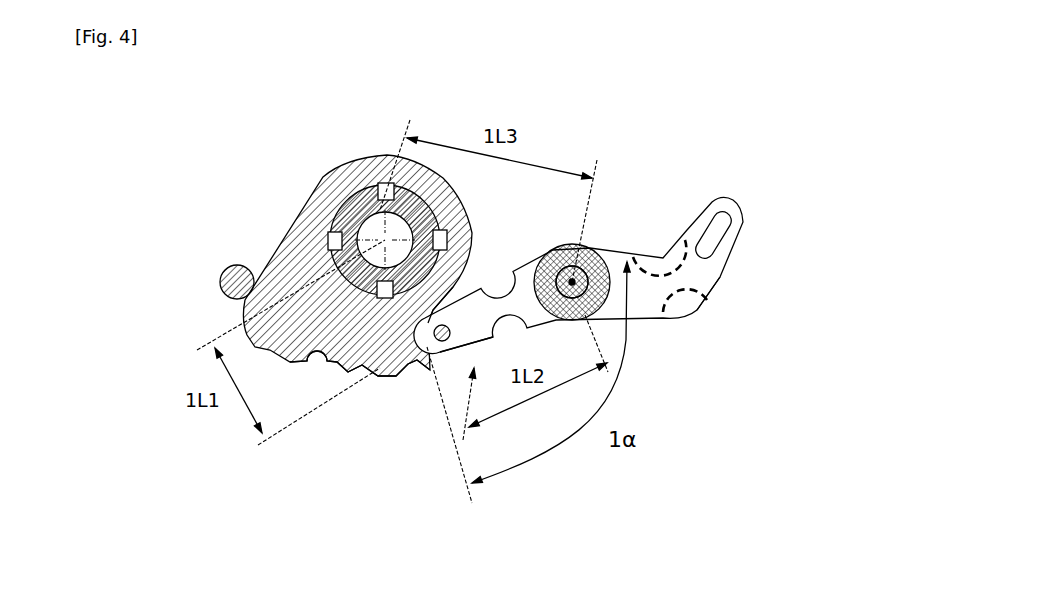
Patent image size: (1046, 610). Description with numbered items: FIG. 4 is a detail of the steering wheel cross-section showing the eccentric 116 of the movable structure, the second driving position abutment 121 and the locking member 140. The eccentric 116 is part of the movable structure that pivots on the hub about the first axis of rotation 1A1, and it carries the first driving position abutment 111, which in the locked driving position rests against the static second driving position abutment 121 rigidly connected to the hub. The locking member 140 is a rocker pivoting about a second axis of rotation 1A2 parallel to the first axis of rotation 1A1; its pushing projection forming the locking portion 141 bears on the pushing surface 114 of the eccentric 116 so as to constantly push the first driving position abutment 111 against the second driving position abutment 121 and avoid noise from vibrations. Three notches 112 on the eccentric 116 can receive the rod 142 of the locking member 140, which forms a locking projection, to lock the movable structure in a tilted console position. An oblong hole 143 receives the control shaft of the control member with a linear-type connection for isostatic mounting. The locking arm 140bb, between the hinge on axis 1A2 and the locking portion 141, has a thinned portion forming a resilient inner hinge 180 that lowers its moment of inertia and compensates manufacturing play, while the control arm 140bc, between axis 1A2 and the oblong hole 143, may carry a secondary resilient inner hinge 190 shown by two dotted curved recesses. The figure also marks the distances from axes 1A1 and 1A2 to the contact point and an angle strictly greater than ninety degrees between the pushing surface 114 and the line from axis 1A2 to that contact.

The eccentric 116 is at (356, 224).
The first driving position abutment 111 is at (306, 265).
The first axis of rotation 1A1 is at (335, 221).
The second driving position abutment 121 is at (177, 256).
The notches 112 is at (281, 421).
The pushing surface 114 is at (418, 372).
The locking member 140 is at (645, 322).
The locking portion 141 is at (387, 427).
The rod 142 is at (480, 247).
The oblong hole 143 is at (769, 258).
The locking arm 140bb is at (403, 453).
The control arm 140bc is at (723, 283).
The resilient inner hinge 180 is at (550, 271).
The second axis of rotation 1A2 is at (621, 235).
The secondary resilient inner hinge 190 is at (724, 313).